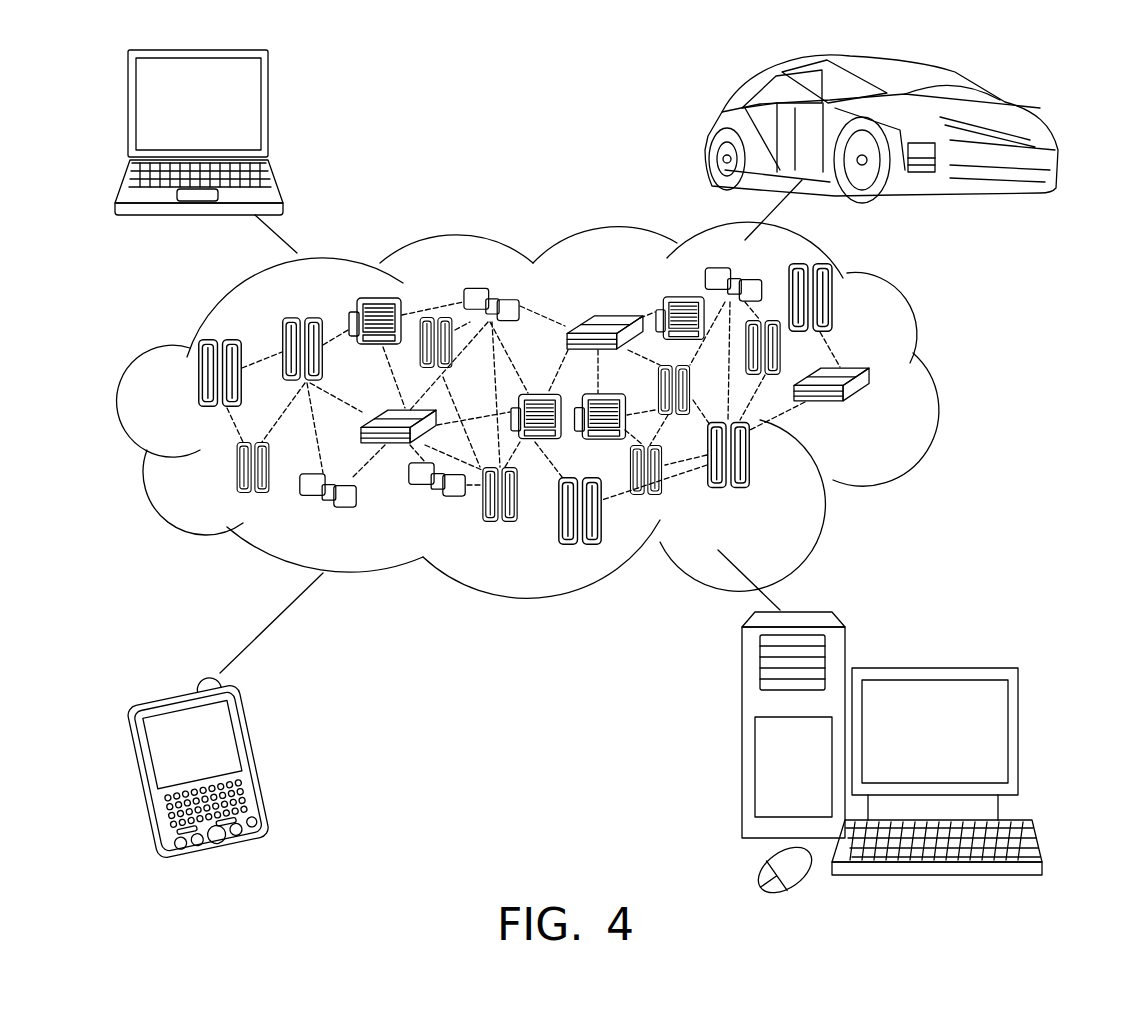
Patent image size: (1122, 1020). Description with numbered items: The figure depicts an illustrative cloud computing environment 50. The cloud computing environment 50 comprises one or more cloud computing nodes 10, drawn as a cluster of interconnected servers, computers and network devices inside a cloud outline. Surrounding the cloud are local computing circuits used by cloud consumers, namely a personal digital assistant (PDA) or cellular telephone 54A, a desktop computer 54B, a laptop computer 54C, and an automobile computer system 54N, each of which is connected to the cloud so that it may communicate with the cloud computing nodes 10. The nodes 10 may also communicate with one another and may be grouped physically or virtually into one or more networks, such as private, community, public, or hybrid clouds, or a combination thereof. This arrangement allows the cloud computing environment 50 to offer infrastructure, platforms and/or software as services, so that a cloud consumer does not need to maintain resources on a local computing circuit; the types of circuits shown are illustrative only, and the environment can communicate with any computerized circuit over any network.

The cloud computing environment 50 is at (930, 384).
The cloud computing node 10 is at (880, 413).
The personal digital assistant (PDA) or cellular telephone 54A is at (257, 762).
The desktop computer 54B is at (930, 668).
The laptop computer 54C is at (268, 113).
The automobile computer system 54N is at (710, 130).